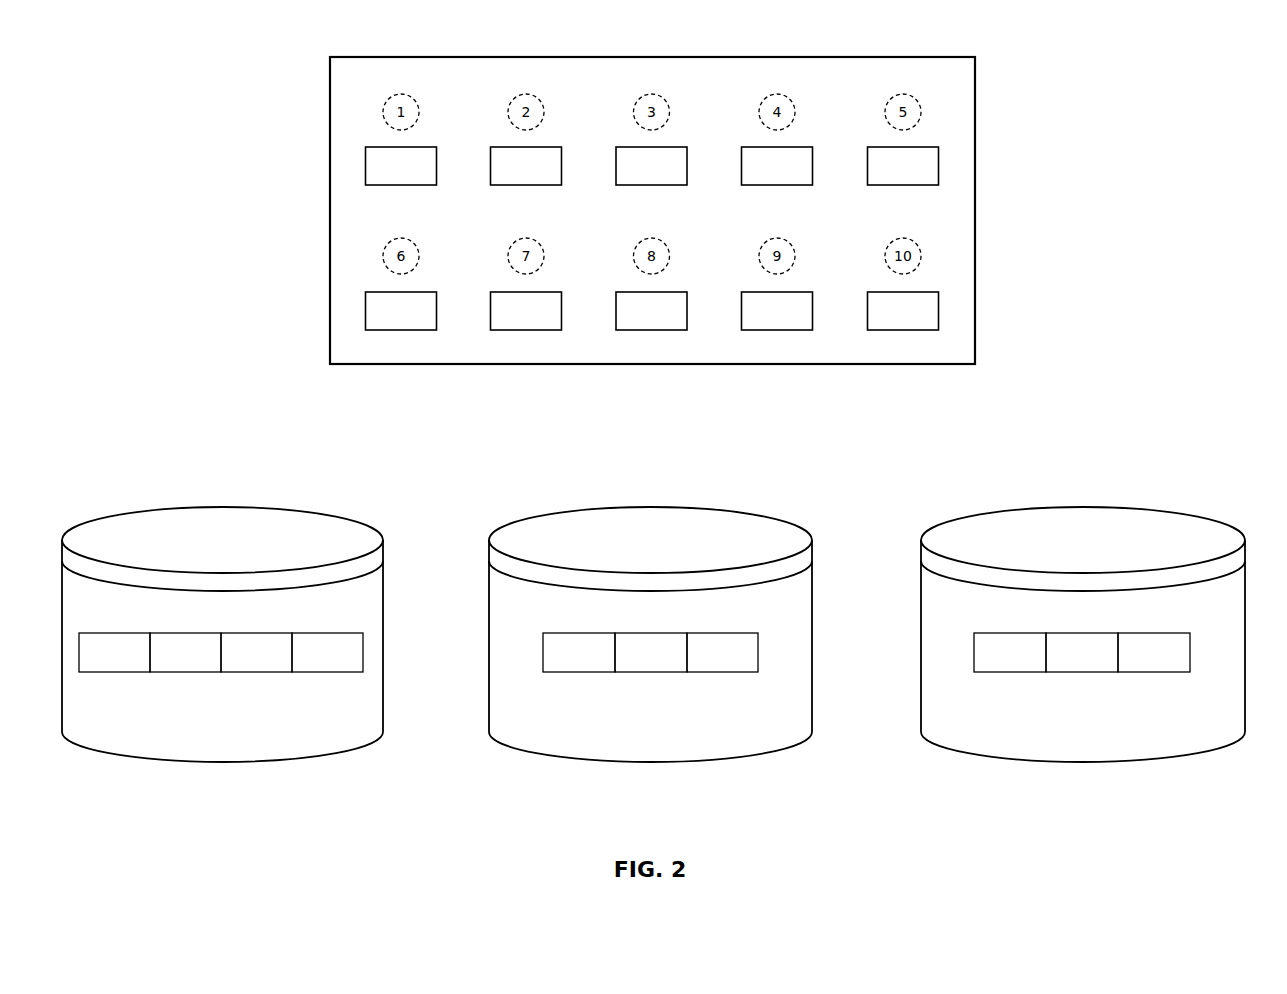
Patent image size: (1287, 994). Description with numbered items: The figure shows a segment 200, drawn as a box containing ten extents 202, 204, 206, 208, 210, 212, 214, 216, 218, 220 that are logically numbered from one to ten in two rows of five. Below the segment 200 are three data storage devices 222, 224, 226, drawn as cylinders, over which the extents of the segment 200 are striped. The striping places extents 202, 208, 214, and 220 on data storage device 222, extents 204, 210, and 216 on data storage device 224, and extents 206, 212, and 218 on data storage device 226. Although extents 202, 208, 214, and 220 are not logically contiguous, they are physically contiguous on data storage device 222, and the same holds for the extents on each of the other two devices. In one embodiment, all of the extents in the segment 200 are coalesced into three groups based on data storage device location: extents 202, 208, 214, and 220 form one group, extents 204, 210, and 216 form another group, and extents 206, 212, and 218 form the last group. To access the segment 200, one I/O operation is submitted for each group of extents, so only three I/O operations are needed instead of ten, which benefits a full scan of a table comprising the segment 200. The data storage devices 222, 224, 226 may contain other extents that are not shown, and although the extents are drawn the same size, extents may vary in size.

The segment 200 is at (975, 111).
The extent 202 is at (258, 409).
The extent 204 is at (553, 409).
The extent 206 is at (831, 409).
The extent 208 is at (481, 409).
The extent 210 is at (777, 409).
The extent 212 is at (742, 482).
The extent 214 is at (391, 482).
The extent 216 is at (687, 482).
The extent 218 is at (966, 482).
The extent 220 is at (615, 482).
The data storage device 222 is at (222, 507).
The data storage device 224 is at (652, 507).
The data storage device 226 is at (1082, 507).